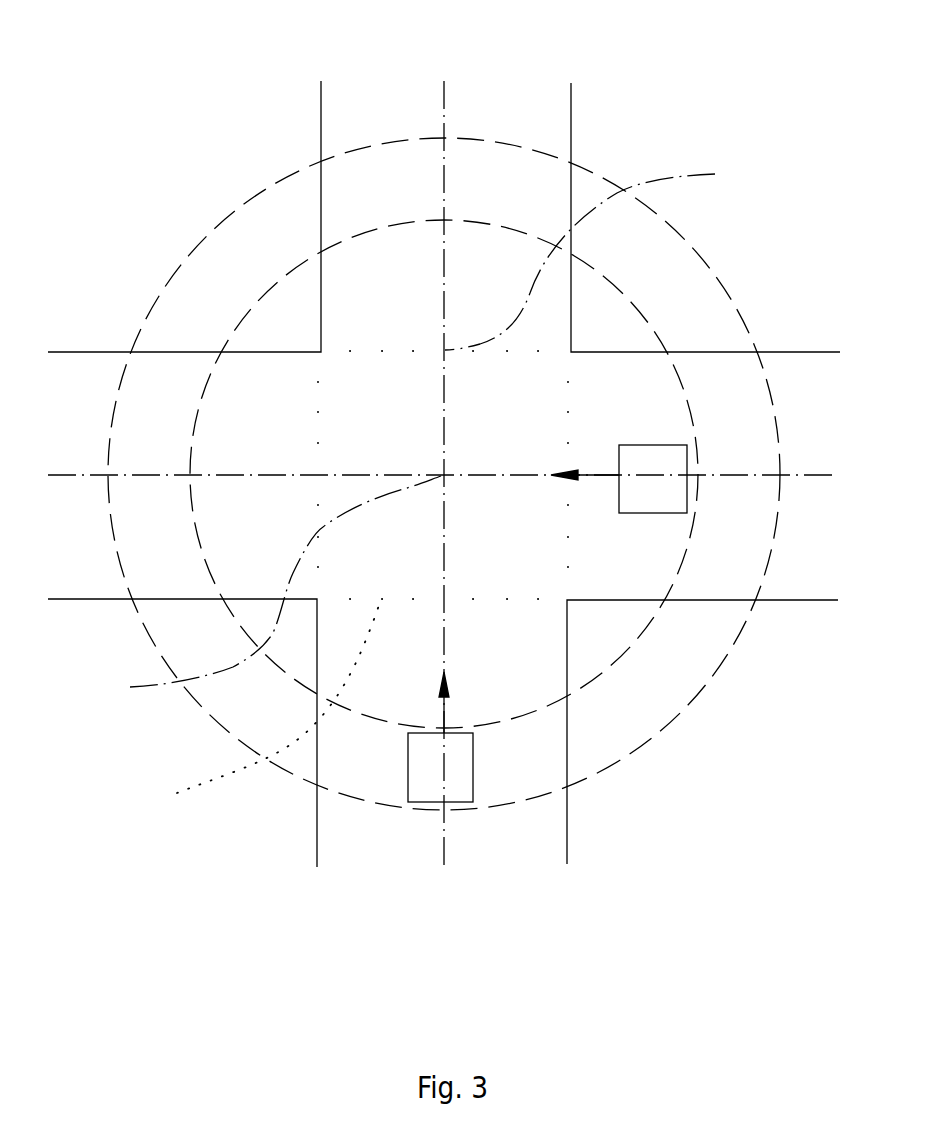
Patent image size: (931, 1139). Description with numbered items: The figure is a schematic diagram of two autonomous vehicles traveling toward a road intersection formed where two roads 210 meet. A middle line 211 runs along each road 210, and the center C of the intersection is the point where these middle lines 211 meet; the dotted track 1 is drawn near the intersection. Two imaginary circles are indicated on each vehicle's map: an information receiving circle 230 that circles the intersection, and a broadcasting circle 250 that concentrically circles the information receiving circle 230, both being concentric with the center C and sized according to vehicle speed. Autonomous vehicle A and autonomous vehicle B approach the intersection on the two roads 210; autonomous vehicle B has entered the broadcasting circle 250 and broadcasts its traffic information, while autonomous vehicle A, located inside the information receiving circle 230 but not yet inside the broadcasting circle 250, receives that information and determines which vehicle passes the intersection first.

The road 210 is at (483, 187).
The information receiving circle 230 is at (262, 192).
The broadcasting circle 250 is at (520, 232).
The middle line 211 is at (603, 256).
The center of the road intersection C is at (273, 590).
The vehicle track 1 is at (270, 706).
The autonomous vehicle A is at (408, 767).
The autonomous vehicle B is at (619, 493).